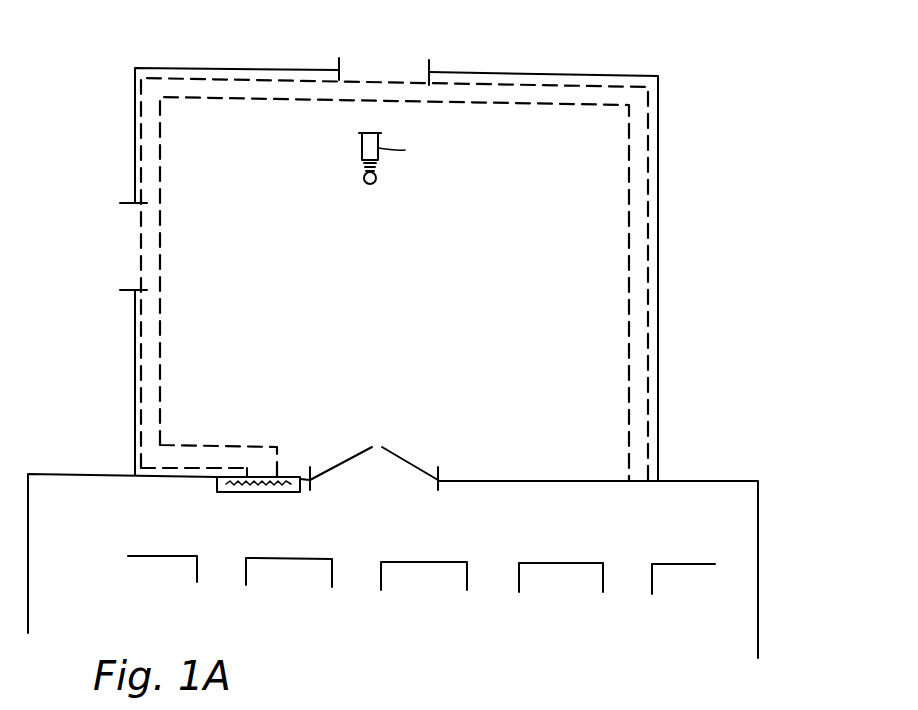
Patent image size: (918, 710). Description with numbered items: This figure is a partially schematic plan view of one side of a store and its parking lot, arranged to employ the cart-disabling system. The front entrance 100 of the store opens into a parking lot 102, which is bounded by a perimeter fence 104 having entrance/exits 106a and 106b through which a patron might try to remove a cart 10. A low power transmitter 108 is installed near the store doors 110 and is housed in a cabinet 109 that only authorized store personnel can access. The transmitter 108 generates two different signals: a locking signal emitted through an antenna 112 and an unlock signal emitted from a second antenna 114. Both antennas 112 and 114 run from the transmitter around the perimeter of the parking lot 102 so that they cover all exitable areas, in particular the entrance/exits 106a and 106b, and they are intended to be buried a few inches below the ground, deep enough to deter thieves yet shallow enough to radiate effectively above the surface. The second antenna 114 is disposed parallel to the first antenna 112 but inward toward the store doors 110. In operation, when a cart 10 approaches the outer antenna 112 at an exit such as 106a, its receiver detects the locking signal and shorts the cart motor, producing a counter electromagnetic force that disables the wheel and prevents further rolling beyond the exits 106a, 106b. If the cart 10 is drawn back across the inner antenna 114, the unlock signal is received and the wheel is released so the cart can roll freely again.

The cart 10 is at (362, 150).
The front entrance 100 is at (562, 481).
The parking lot 102 is at (401, 372).
The perimeter fence 104 is at (658, 320).
The entrance/exit 106a is at (136, 222).
The entrance/exit 106b is at (413, 62).
The low power transmitter 108 is at (288, 478).
The cabinet 109 is at (217, 487).
The store doors 110 is at (400, 466).
The antenna 112 is at (680, 155).
The second antenna 114 is at (680, 223).